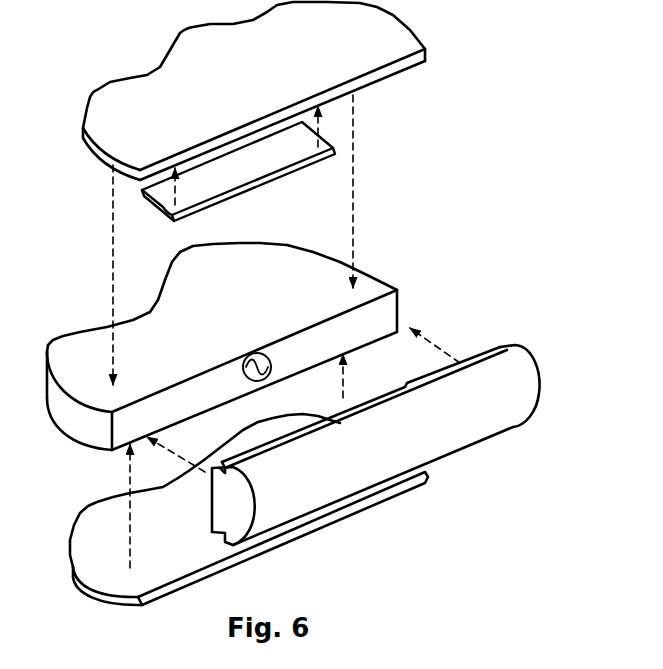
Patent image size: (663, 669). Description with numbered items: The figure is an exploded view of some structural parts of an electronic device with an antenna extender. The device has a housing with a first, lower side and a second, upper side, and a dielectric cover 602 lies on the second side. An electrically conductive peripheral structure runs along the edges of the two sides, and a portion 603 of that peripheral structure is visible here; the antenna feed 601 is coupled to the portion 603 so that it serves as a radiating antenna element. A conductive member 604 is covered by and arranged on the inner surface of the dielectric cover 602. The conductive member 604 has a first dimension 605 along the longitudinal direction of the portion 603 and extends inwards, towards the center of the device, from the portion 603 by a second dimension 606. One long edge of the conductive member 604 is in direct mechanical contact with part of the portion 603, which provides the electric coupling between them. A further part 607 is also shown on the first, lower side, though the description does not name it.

The antenna feed 601 is at (266, 380).
The dielectric cover 602 is at (103, 92).
The portion of the electrically conductive peripheral structure 603 is at (503, 422).
The conductive member 604 is at (285, 162).
The first dimension 605 is at (347, 160).
The second dimension 606 is at (159, 223).
The bottom plate 607 is at (83, 567).